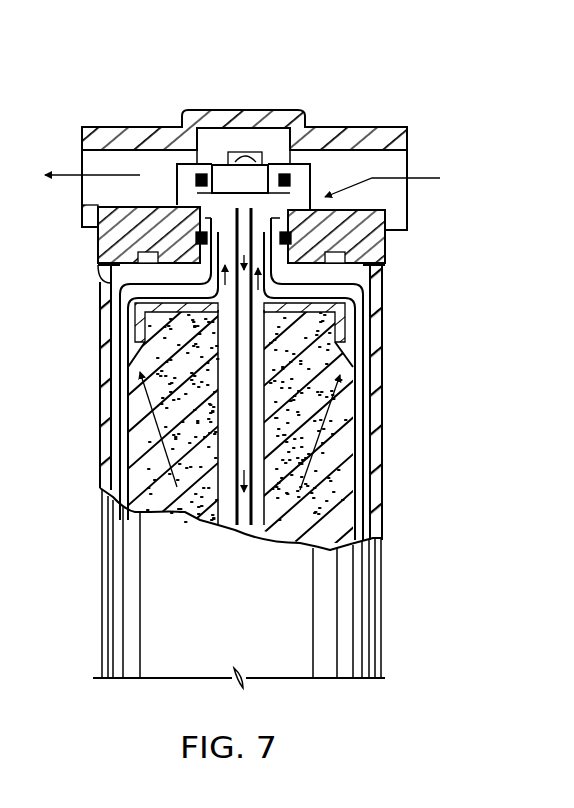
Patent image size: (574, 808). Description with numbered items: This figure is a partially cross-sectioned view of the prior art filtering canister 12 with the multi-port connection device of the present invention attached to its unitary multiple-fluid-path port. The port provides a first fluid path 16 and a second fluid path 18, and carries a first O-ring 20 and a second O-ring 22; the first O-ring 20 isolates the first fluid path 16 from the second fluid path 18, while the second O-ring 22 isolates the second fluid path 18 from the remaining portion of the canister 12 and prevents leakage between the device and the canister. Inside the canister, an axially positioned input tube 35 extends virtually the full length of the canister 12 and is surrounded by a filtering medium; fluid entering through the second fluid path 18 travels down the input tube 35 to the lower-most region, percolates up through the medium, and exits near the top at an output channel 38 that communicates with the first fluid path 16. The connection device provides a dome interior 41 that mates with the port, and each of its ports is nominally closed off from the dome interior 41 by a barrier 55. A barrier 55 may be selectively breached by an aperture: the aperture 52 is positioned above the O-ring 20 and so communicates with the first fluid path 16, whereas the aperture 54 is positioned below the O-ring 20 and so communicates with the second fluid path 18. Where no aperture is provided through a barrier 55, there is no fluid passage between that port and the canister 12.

The canister 12 is at (108, 440).
The first fluid path 16 is at (236, 183).
The second fluid path 18 is at (192, 206).
The first O-ring 20 is at (186, 156).
The second O-ring 22 is at (196, 240).
The input tube 35 is at (255, 447).
The output channel 38 is at (356, 348).
The dome interior 41 is at (254, 200).
The aperture 52 is at (178, 157).
The aperture 54 is at (313, 202).
The barrier 55 is at (300, 173).